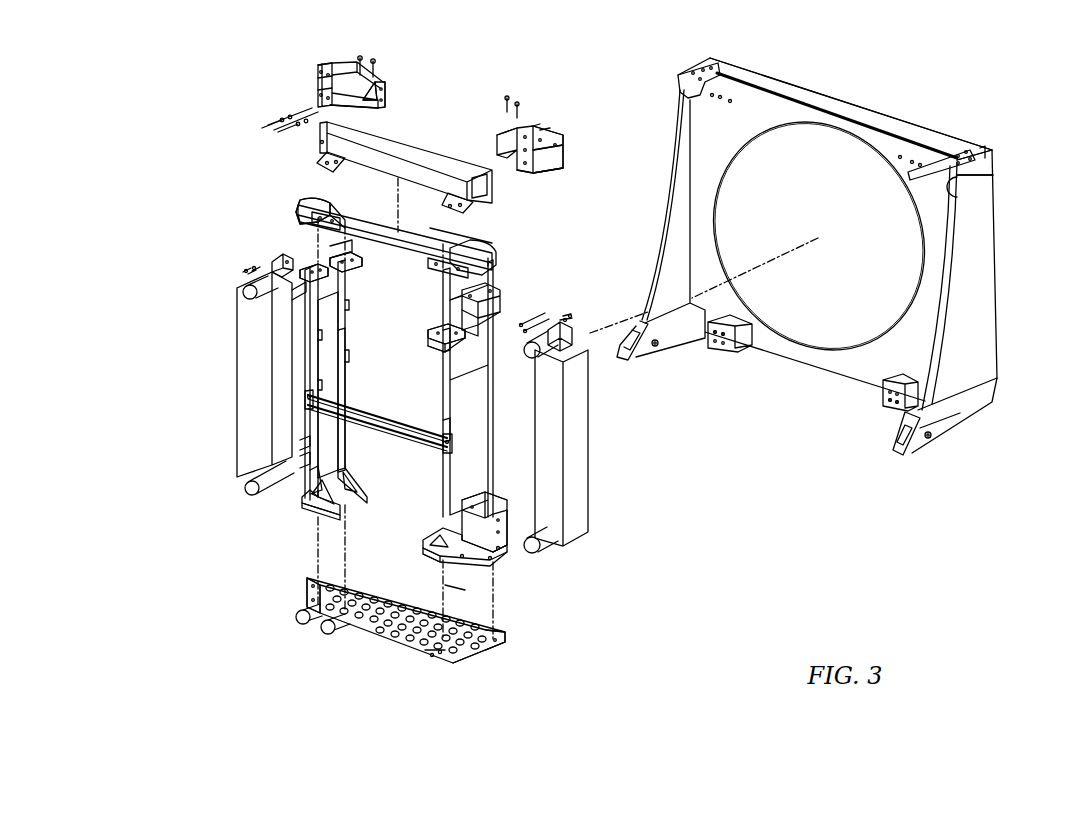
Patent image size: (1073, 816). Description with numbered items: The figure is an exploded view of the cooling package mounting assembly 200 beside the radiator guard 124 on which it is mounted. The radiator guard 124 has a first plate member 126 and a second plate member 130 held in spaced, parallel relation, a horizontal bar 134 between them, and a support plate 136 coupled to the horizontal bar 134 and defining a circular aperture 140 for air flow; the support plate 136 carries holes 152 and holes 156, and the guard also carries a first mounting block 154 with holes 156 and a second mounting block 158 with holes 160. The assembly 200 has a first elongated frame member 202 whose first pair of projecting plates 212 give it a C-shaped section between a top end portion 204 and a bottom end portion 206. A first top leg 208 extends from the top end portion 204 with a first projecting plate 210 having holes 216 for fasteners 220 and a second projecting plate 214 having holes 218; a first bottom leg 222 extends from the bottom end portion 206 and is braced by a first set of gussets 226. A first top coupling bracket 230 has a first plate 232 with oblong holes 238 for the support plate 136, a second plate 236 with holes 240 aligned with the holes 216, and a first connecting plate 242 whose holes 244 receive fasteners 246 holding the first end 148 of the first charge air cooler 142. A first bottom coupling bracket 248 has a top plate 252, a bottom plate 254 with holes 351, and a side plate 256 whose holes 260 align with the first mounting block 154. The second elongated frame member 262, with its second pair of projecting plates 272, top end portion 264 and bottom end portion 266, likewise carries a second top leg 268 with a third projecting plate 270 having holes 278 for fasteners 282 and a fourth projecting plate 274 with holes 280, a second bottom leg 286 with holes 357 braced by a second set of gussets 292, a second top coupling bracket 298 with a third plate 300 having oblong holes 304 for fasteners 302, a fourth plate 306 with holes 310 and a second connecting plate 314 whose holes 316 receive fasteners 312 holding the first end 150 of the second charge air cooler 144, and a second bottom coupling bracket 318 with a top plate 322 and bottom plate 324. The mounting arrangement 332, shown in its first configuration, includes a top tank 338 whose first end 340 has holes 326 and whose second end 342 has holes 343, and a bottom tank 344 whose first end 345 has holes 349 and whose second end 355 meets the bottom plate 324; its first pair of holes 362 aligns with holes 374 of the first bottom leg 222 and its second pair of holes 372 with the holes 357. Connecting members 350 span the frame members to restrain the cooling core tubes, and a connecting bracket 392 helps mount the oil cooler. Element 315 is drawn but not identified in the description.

The radiator guard 124 is at (1003, 135).
The first plate member 126 is at (978, 243).
The second plate member 130 is at (672, 110).
The horizontal bar 134 is at (870, 113).
The support plate 136 is at (830, 122).
The aperture 140 is at (913, 278).
The first charge air cooler 142 is at (576, 385).
The second charge air cooler 144 is at (244, 380).
The first end 148 is at (575, 323).
The first end 150 is at (278, 256).
The holes 152 is at (920, 165).
The first mounting block 154 is at (885, 386).
The holes 156 is at (730, 101).
The second mounting block 158 is at (750, 348).
The holes 160 is at (722, 352).
The cooling package mounting assembly 200 is at (684, 495).
The first elongated frame member 202 is at (478, 393).
The top end portion 204 is at (495, 345).
The bottom end portion 206 is at (455, 590).
The first top leg 208 is at (440, 336).
The first projecting plate 210 is at (456, 300).
The first pair of projecting plates 212 is at (445, 465).
The second projecting plate 214 is at (436, 330).
The holes 216 is at (490, 293).
The holes 218 is at (445, 345).
The fasteners 220 is at (505, 98).
The first bottom leg 222 is at (428, 548).
The first set of gussets 226 is at (432, 528).
The first top coupling bracket 230 is at (575, 128).
The first plate 232 is at (560, 166).
The second plate 236 is at (546, 160).
The holes 238 is at (556, 148).
The holes 240 is at (515, 136).
The first connecting plate 242 is at (531, 178).
The holes 244 is at (535, 128).
The fasteners 246 is at (530, 322).
The first bottom coupling bracket 248 is at (496, 482).
The top plate 252 is at (500, 520).
The bottom plate 254 is at (462, 558).
The side plate 256 is at (506, 528).
The holes 260 is at (506, 540).
The second elongated frame member 262 is at (298, 420).
The top end portion 264 is at (325, 320).
The bottom end portion 266 is at (316, 501).
The second top leg 268 is at (356, 289).
The third projecting plate 270 is at (340, 256).
The second pair of projecting plates 272 is at (340, 360).
The fourth projecting plate 274 is at (315, 268).
The holes 278 is at (348, 270).
The holes 280 is at (297, 306).
The fasteners 282 is at (378, 62).
The second bottom leg 286 is at (318, 511).
The second set of gussets 292 is at (353, 465).
The second top coupling bracket 298 is at (388, 74).
The third plate 300 is at (374, 96).
The fasteners 302 is at (268, 125).
The holes 304 is at (318, 92).
The fourth plate 306 is at (381, 107).
The holes 310 is at (368, 104).
The fasteners 312 is at (243, 273).
The second connecting plate 314 is at (320, 68).
The fasteners 315 is at (567, 317).
The holes 316 is at (320, 80).
The second bottom coupling bracket 318 is at (300, 441).
The top plate 322 is at (300, 461).
The bottom plate 324 is at (320, 486).
The holes 326 is at (444, 274).
The mounting arrangement 332 is at (291, 208).
The top tank 338 is at (371, 230).
The first end 340 is at (505, 261).
The second end 342 is at (310, 202).
The holes 343 is at (318, 222).
The bottom tank 344 is at (356, 635).
The first end 345 is at (500, 633).
The holes 349 is at (500, 648).
The connecting members 350 is at (410, 415).
The holes 351 is at (500, 556).
The second end 355 is at (308, 586).
The holes 357 is at (318, 514).
The first pair of holes 362 is at (430, 657).
The second pair of holes 372 is at (308, 624).
The holes 374 is at (425, 562).
The connecting bracket 392 is at (466, 240).